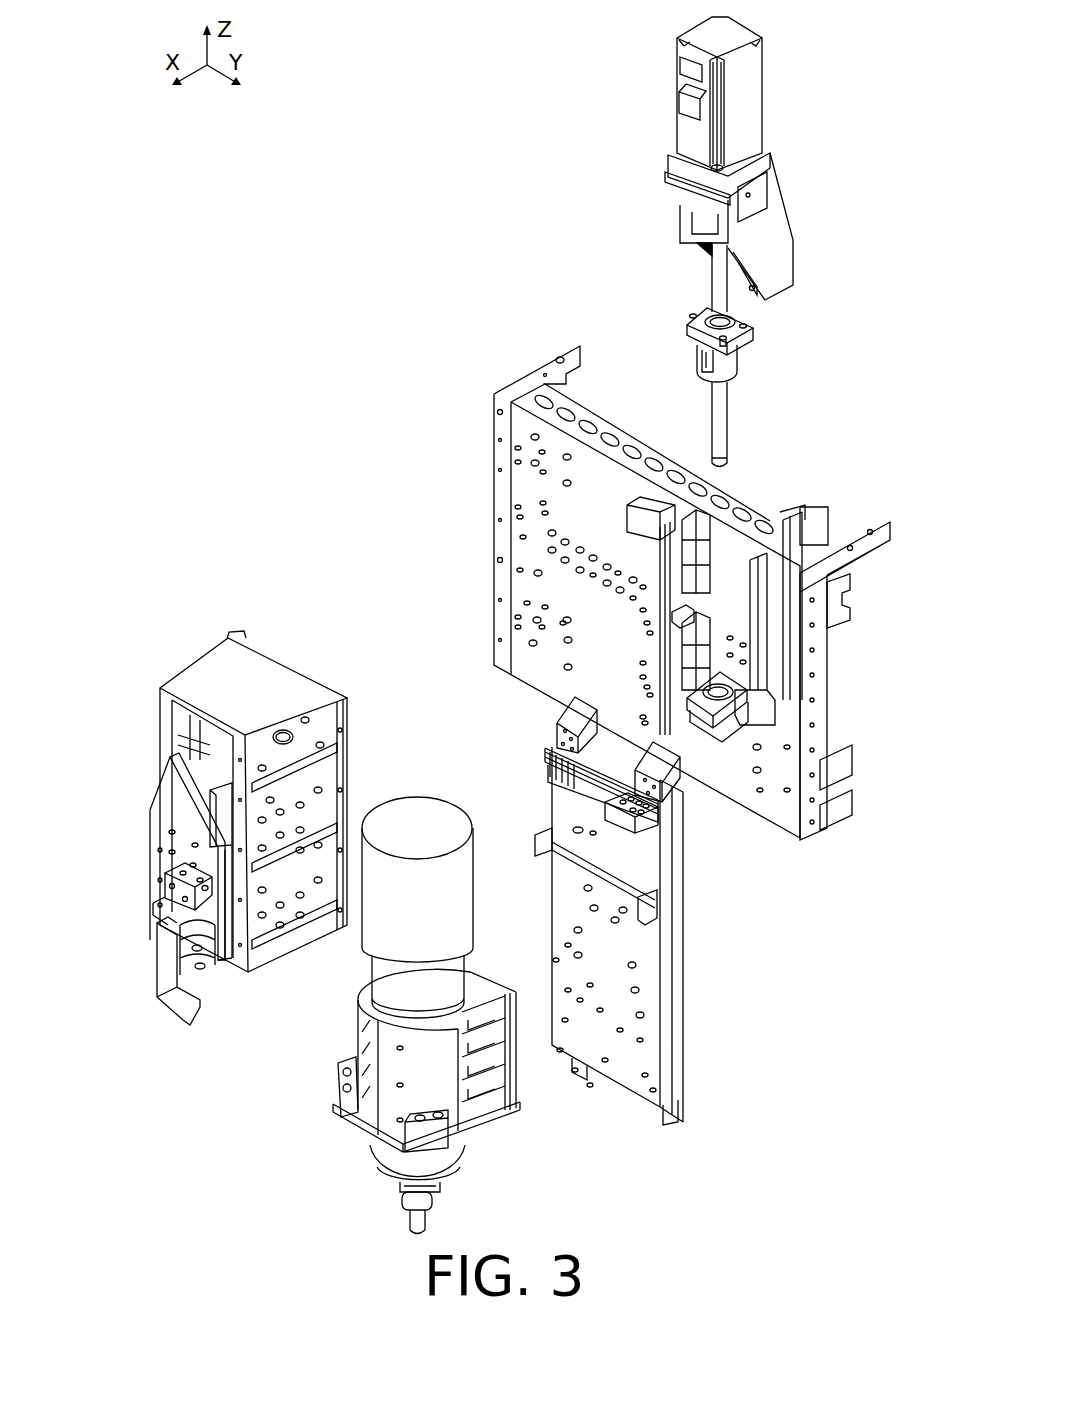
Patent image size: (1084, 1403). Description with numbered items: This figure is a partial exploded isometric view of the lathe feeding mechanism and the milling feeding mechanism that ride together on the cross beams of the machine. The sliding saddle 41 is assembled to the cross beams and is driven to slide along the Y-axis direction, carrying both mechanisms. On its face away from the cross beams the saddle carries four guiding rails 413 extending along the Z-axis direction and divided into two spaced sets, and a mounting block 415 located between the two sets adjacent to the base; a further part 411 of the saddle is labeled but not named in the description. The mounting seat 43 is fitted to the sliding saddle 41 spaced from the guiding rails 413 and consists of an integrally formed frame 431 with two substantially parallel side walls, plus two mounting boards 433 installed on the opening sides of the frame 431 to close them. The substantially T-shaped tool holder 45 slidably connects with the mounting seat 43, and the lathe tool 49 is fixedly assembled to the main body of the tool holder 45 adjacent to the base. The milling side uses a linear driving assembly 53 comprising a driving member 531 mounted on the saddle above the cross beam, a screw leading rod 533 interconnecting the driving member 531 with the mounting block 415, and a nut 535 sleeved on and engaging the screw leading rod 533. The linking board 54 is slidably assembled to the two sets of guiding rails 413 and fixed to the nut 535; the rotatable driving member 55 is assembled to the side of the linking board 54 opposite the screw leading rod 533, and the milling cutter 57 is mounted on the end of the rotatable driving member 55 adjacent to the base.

The sliding saddle 41 is at (470, 480).
The sliding block 411 is at (843, 612).
The guiding rails 413 is at (697, 530).
The mounting block 415 is at (733, 725).
The mounting seat 43 is at (187, 582).
The frame 431 is at (213, 682).
The mounting boards 433 is at (243, 640).
The tool holder 45 is at (170, 803).
The lathe tool 49 is at (168, 978).
The linear driving assembly 53 is at (877, 78).
The driving member 531 is at (742, 108).
The screw leading rod 533 is at (718, 307).
The nut 535 is at (728, 365).
The linking board 54 is at (670, 987).
The rotatable driving member 55 is at (430, 1073).
The milling cutter 57 is at (425, 1202).